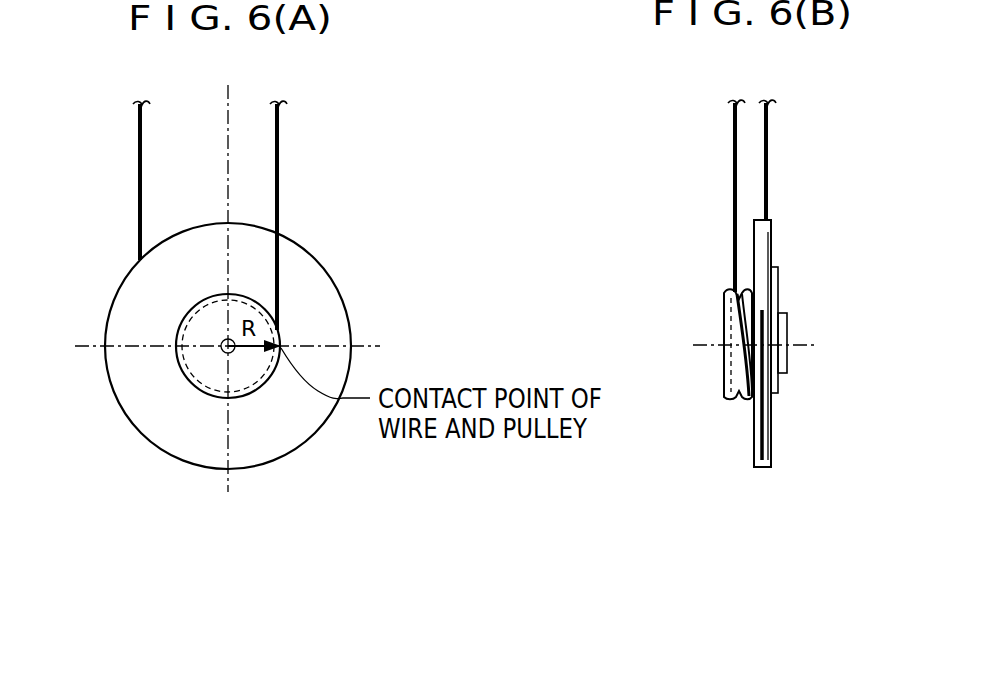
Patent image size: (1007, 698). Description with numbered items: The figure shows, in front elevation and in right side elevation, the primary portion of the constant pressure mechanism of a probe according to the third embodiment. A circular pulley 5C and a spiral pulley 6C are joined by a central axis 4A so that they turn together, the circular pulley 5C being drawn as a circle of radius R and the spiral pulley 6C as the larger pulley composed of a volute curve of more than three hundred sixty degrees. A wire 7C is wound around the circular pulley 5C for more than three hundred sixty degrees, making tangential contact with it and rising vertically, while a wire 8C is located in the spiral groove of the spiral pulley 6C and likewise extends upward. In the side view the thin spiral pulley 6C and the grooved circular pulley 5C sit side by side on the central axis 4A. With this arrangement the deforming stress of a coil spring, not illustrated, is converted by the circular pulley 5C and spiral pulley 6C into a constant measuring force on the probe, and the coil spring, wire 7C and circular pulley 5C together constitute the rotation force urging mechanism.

In FIG. 6A, the central axis 4A is at (223, 340).
In FIG. 6A, the circular pulley 5C is at (245, 377).
In FIG. 6B, the circular pulley 5C is at (724, 370).
In FIG. 6A, the spiral pulley 6C is at (160, 409).
In FIG. 6B, the spiral pulley 6C is at (763, 287).
In FIG. 6A, the wire 7C is at (277, 163).
In FIG. 6B, the wire 7C is at (735, 183).
In FIG. 6A, the wire 8C is at (140, 167).
In FIG. 6B, the wire 8C is at (766, 150).